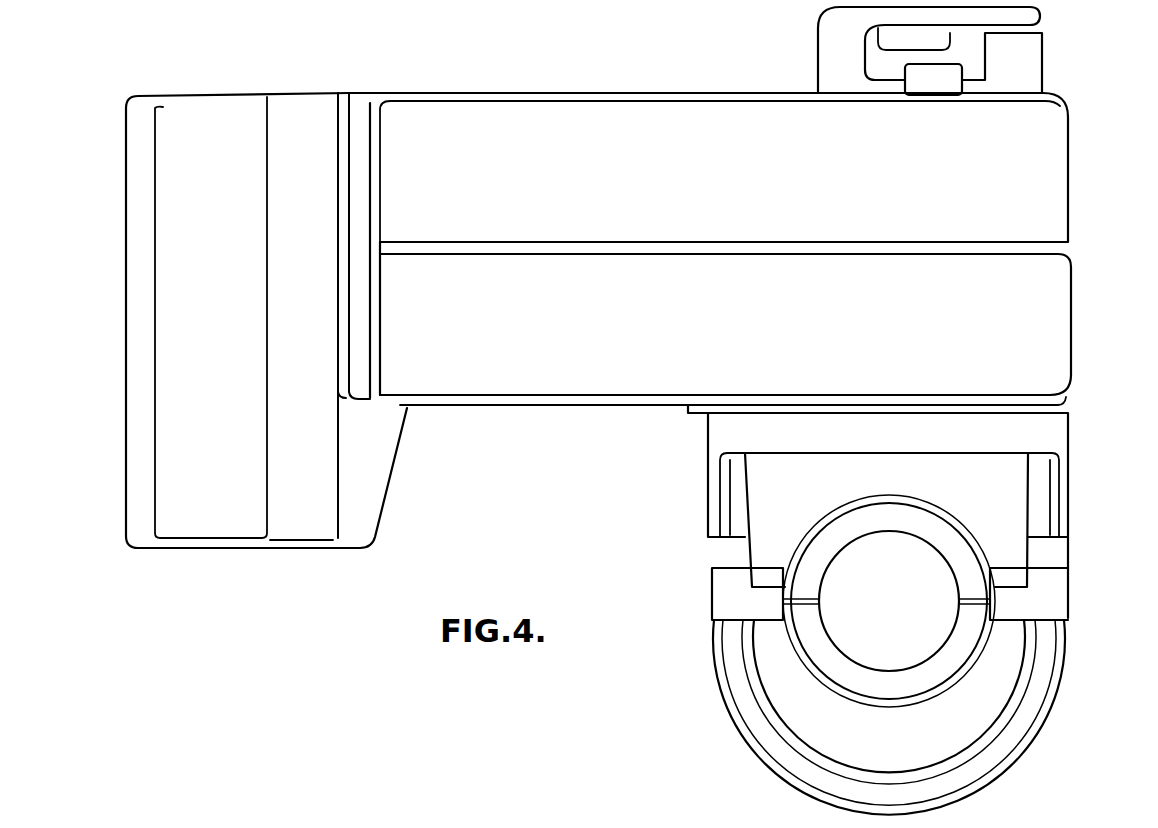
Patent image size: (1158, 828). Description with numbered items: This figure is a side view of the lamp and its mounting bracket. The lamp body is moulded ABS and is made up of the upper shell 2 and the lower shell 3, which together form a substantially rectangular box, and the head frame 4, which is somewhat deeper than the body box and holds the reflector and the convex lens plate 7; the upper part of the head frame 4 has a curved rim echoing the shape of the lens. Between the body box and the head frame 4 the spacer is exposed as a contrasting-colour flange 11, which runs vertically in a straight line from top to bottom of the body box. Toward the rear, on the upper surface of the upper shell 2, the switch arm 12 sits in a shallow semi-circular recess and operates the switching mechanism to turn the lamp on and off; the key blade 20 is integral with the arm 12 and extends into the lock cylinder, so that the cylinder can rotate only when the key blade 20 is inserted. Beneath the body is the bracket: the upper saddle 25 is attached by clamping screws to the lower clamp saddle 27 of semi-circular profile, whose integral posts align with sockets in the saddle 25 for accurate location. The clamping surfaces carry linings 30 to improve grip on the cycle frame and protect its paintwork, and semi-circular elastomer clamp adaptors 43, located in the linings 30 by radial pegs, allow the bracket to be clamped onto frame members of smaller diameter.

The upper shell 2 is at (537, 120).
The lower shell 3 is at (550, 382).
The head frame 4 is at (327, 542).
The lens plate 7 is at (227, 542).
The flange 11 is at (376, 99).
The arm 12 is at (827, 57).
The key blade 20 is at (940, 86).
The saddle 25 is at (1076, 496).
The lower clamp saddle 27 is at (1072, 639).
The linings 30 is at (822, 523).
The clamp adaptors 43 is at (823, 553).